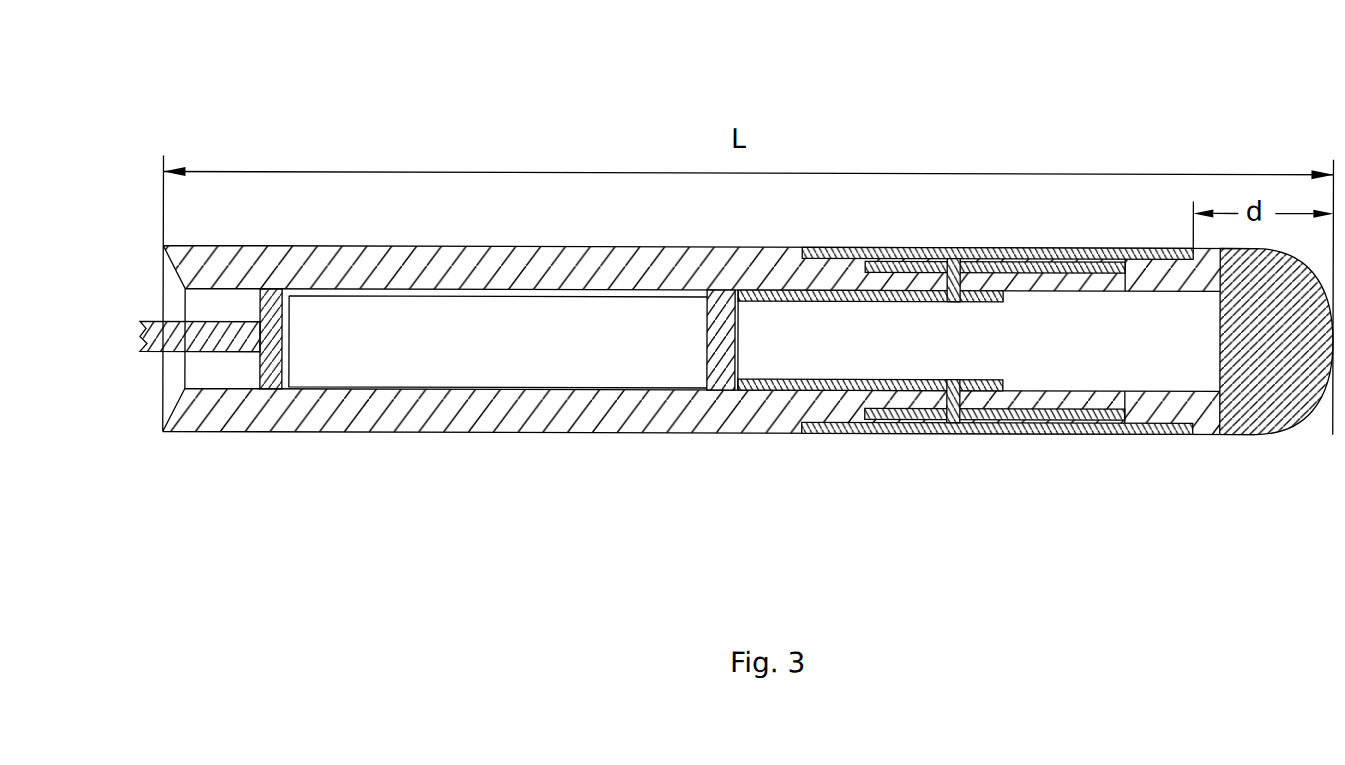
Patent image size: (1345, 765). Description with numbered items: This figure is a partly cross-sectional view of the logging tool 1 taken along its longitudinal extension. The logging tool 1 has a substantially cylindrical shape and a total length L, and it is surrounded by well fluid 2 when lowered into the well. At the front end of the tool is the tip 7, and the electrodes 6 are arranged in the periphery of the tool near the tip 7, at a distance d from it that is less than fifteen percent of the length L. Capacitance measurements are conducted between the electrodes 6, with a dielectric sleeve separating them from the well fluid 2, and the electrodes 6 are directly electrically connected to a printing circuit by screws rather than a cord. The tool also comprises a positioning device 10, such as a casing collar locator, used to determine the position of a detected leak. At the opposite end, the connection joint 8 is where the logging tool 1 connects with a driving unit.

The logging tool 1 is at (492, 146).
The well fluid 2 is at (803, 225).
The electrodes 6 is at (1068, 263).
The tip 7 is at (1333, 433).
The connection joint 8 is at (213, 333).
The positioning device 10 is at (495, 333).